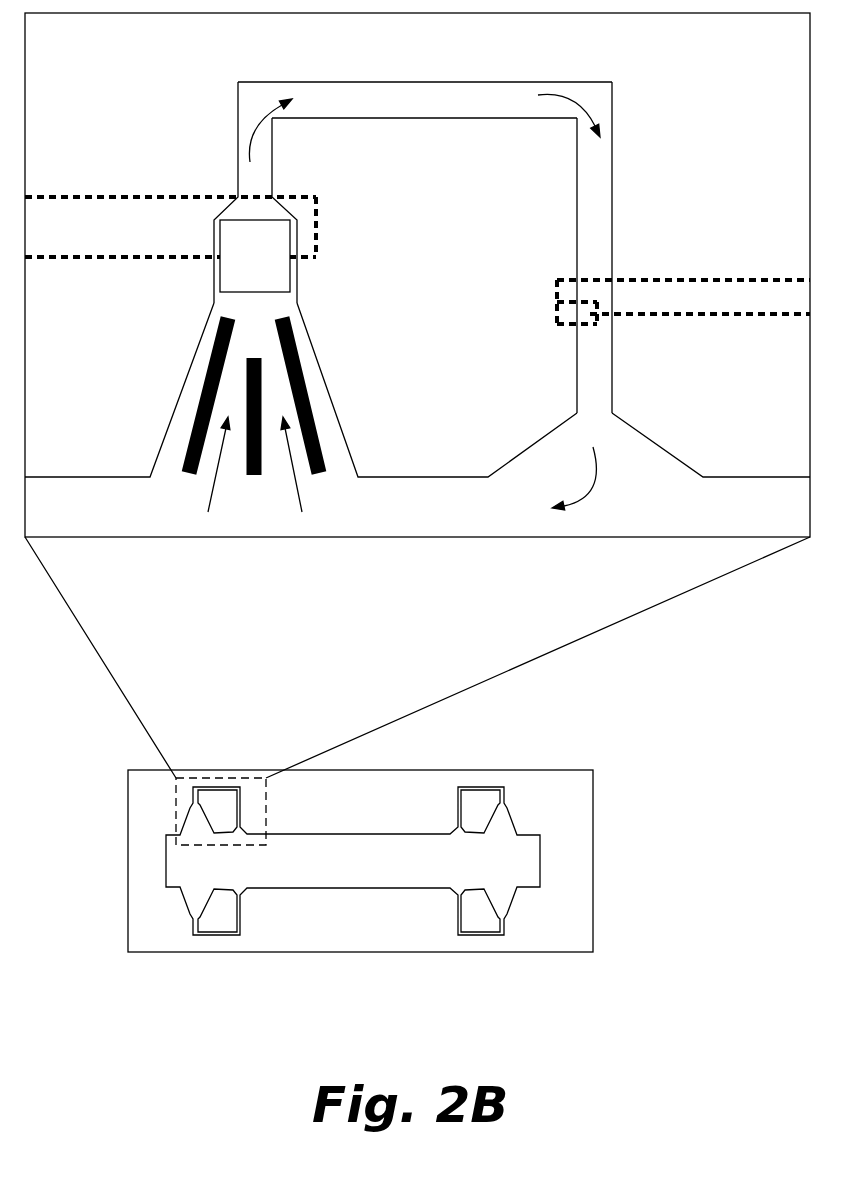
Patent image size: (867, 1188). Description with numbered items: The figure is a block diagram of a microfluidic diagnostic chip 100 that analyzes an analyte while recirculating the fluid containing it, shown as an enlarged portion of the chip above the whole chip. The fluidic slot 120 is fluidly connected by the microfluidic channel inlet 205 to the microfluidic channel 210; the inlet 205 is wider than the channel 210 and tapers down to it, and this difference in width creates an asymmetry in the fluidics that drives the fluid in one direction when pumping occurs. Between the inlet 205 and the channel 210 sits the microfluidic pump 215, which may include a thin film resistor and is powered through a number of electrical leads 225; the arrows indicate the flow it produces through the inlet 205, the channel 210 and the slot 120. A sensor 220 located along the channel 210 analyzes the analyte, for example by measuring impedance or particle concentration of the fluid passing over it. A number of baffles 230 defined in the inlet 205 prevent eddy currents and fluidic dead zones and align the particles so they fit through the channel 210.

The microfluidic diagnostic chip 100 is at (670, 954).
The fluidic slot 120 is at (398, 507).
The microfluidic channel inlet 205 is at (245, 524).
The microfluidic channel 210 is at (259, 204).
The microfluidic pump 215 is at (238, 267).
The sensor 220 is at (620, 253).
The electrical leads 225 is at (135, 197).
The baffles 230 is at (208, 362).